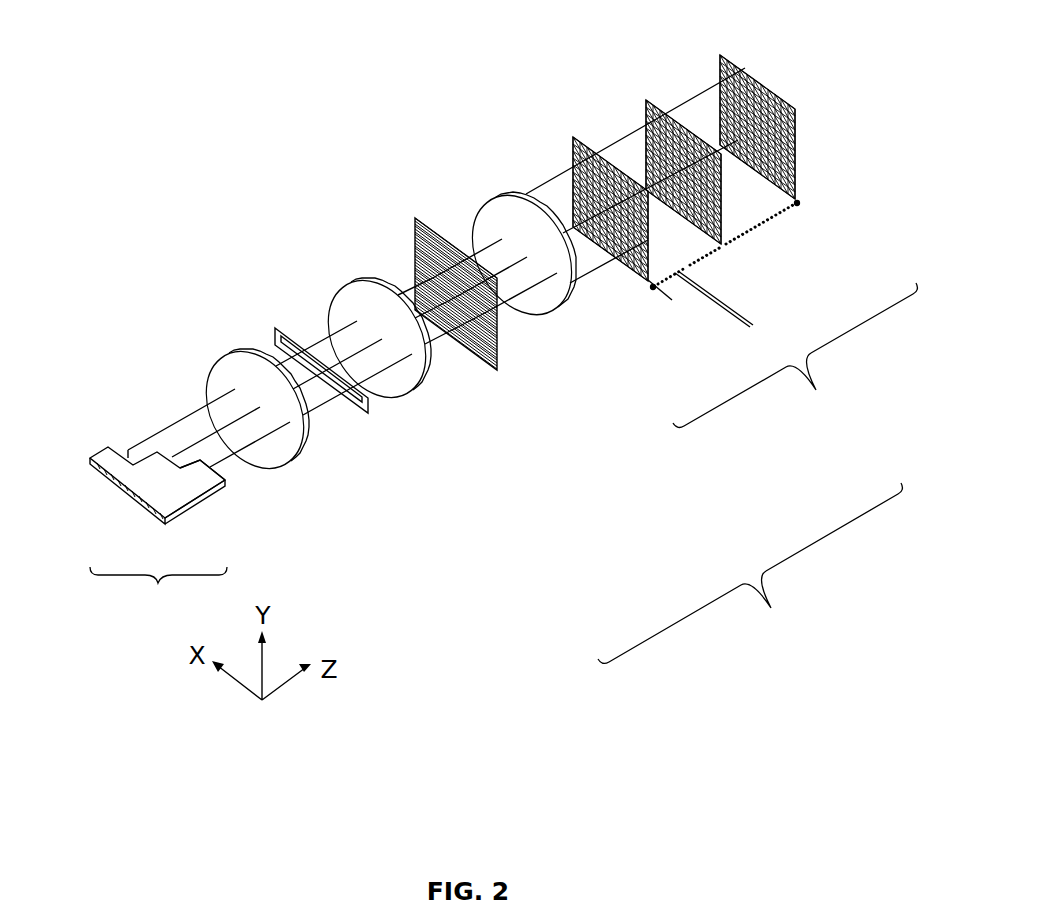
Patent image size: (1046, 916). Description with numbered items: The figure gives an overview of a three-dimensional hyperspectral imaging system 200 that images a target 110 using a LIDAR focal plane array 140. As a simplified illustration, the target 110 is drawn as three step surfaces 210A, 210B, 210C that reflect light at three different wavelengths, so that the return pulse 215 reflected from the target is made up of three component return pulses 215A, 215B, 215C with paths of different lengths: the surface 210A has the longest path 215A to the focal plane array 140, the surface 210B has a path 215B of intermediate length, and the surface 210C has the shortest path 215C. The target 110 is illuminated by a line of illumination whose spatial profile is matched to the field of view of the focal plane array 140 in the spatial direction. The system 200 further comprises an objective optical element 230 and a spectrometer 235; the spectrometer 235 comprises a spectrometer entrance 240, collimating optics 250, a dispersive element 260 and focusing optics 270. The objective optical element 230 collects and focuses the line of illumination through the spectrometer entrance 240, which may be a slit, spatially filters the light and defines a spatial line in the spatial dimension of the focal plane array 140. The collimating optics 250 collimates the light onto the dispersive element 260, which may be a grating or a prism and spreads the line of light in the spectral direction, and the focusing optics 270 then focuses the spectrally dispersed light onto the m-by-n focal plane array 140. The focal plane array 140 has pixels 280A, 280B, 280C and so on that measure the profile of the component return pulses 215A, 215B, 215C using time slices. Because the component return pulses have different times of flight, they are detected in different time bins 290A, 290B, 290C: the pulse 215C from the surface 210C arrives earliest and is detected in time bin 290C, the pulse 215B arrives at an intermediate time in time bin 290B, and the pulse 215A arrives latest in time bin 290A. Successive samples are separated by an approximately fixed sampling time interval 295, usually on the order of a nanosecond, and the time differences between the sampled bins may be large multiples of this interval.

The target 110 is at (158, 536).
The LIDAR focal plane array 140 is at (690, 235).
The system 200 is at (532, 690).
The step surface 210A is at (120, 447).
The step surface 210B is at (220, 474).
The step surface 210C is at (238, 468).
The return pulse 215 is at (214, 396).
The component return pulse 215A is at (132, 449).
The component return pulse 215B is at (327, 356).
The component return pulse 215C is at (440, 342).
The objective optical element 230 is at (240, 352).
The spectrometer 235 is at (750, 573).
The spectrometer entrance 240 is at (368, 413).
The collimating optics 250 is at (393, 398).
The dispersive element 260 is at (495, 372).
The focusing optics 270 is at (543, 297).
The pixel 280A is at (578, 138).
The pixel 280B is at (636, 284).
The pixel 280C is at (780, 189).
The time bin 290A is at (808, 210).
The time bin 290B is at (742, 257).
The time bin 290C is at (660, 290).
The sampling time interval 295 is at (748, 330).